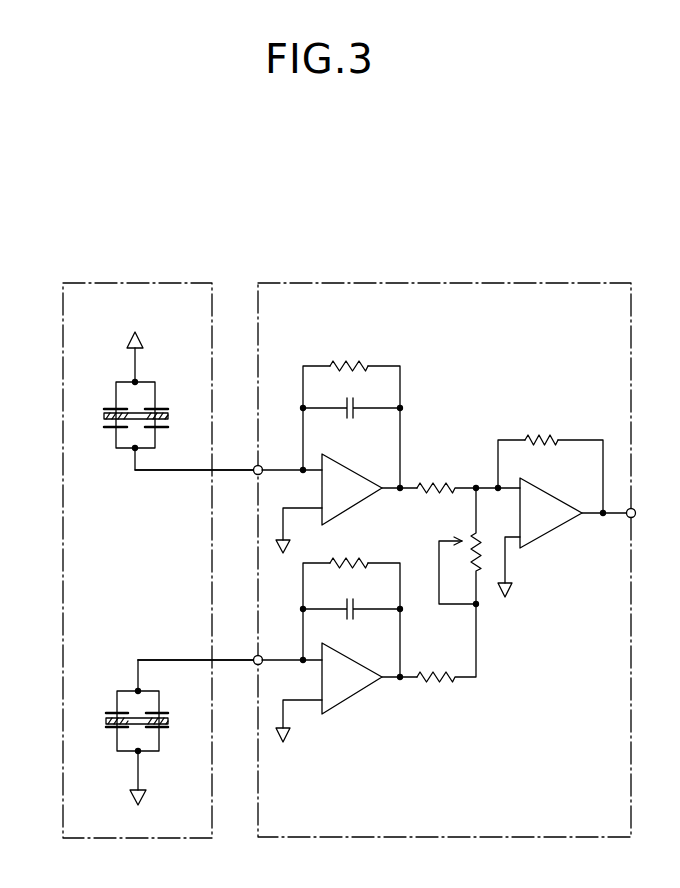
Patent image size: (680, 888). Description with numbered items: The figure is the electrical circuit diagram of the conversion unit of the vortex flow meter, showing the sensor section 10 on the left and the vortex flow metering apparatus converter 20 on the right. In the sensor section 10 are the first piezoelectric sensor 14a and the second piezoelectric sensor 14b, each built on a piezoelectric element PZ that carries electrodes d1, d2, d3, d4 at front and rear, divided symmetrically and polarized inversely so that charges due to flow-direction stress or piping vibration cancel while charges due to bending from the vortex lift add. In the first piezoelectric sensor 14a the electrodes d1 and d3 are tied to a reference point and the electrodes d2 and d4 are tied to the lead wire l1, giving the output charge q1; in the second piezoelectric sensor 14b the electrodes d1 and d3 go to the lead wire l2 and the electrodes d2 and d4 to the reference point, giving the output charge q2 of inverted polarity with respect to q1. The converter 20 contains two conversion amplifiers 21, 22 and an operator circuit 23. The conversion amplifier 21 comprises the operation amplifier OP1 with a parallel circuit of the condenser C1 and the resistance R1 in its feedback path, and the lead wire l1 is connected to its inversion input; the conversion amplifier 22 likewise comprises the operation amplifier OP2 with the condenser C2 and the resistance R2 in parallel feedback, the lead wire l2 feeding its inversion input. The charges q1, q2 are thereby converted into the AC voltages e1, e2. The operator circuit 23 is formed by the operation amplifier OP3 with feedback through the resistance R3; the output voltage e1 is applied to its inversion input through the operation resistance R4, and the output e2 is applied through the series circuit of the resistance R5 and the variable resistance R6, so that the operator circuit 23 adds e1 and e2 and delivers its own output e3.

The sensor unit 10 is at (122, 284).
The vortex flow metering apparatus converter 20 is at (435, 284).
The conversion amplifier 21 is at (385, 440).
The conversion amplifier 22 is at (339, 669).
The operator circuit 23 is at (564, 543).
The first piezoelectric sensor 14a is at (135, 444).
The second piezoelectric sensor 14b is at (135, 696).
The electrode d1 is at (110, 408).
The electrode d2 is at (110, 428).
The electrode d3 is at (164, 408).
The electrode d4 is at (166, 428).
The piezoelectric element PZ is at (104, 416).
The lead wire l1 is at (173, 471).
The lead wire l2 is at (182, 659).
The output charge q1 is at (245, 481).
The output charge q2 is at (245, 673).
The output voltage e1 is at (399, 506).
The output voltage e2 is at (399, 694).
The output e3 is at (644, 514).
The resistance R1 is at (349, 354).
The resistance R2 is at (349, 551).
The resistance R3 is at (541, 429).
The operation resistance R4 is at (468, 478).
The resistance R5 is at (446, 643).
The variable resistance R6 is at (460, 546).
The condenser C1 is at (352, 424).
The condenser C2 is at (352, 623).
The operation amplifier OP1 is at (352, 489).
The operation amplifier OP2 is at (352, 678).
The operation amplifier OP3 is at (551, 513).